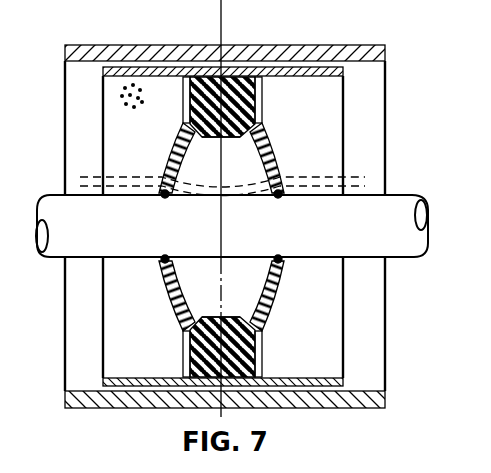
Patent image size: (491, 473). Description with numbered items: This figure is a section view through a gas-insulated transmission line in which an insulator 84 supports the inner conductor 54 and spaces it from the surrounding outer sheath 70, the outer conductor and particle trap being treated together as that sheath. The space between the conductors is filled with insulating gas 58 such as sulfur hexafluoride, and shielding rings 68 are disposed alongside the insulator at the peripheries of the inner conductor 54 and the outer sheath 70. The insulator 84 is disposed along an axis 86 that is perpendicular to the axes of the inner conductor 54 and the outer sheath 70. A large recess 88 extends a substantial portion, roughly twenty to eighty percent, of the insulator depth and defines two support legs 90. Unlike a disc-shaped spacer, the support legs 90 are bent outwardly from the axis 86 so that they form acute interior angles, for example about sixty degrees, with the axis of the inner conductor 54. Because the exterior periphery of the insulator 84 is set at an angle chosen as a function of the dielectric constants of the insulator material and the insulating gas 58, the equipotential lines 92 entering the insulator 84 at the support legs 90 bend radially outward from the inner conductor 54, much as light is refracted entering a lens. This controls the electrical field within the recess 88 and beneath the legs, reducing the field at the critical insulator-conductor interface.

The inner conductor 54 is at (53, 200).
The insulating gas 58 is at (117, 96).
The shielding rings 68 is at (165, 255).
The outer sheath 70 is at (144, 66).
The insulator 84 is at (190, 113).
The axis 86 is at (224, 16).
The recess 88 is at (232, 158).
The support legs 90 is at (177, 157).
The equipotential lines 92 is at (128, 188).